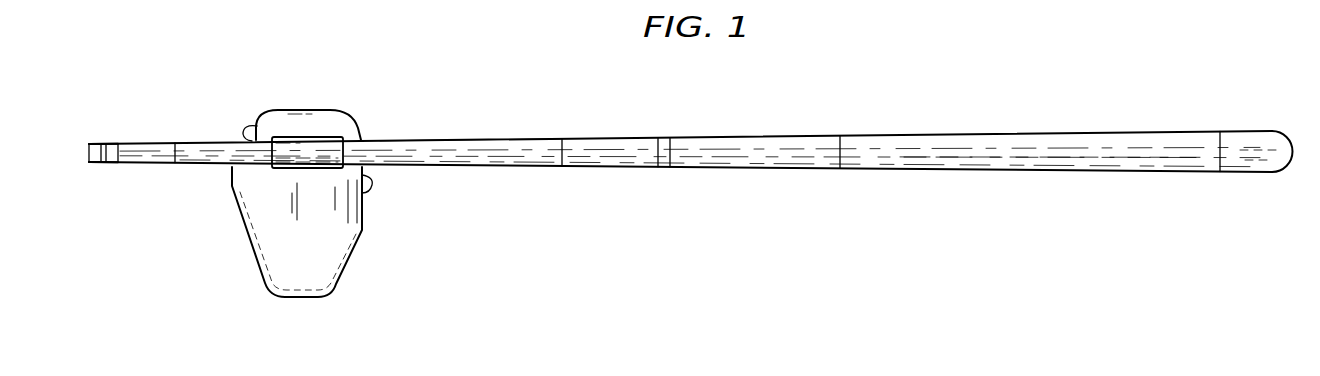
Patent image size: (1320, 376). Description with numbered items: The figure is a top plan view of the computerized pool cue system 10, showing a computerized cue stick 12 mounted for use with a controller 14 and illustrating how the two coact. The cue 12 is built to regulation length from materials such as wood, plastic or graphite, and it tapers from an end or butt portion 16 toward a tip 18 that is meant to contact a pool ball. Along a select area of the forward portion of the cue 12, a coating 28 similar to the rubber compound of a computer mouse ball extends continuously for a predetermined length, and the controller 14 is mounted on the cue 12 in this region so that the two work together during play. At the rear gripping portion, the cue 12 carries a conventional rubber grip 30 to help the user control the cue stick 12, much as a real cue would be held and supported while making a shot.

The computerized pool cue system 10 is at (430, 120).
The computerized cue stick 12 is at (1030, 120).
The controller 14 is at (307, 96).
The end or butt portion 16 is at (1267, 142).
The tip 18 is at (92, 148).
The coating 28 is at (492, 155).
The rubber grip 30 is at (1052, 148).